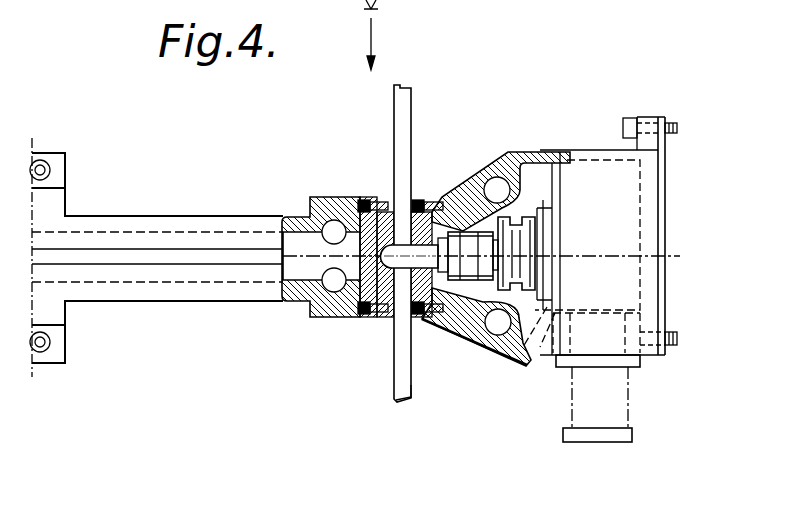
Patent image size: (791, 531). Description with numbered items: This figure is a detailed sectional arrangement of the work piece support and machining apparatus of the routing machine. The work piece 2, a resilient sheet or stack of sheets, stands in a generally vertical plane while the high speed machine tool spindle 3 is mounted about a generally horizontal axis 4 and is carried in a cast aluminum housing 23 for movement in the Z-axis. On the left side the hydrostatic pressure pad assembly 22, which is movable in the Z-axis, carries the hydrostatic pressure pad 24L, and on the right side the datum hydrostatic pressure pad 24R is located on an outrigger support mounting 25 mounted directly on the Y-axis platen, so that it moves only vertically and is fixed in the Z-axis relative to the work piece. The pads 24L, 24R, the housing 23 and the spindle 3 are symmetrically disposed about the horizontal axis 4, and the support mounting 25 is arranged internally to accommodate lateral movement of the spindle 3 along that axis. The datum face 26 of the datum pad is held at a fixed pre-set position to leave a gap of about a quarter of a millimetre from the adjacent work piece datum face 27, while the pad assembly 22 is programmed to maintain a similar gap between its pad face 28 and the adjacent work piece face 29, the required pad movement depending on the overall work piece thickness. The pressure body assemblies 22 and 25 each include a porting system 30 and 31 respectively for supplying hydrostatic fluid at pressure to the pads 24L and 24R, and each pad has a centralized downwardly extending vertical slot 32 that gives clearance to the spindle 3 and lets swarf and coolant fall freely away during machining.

The work piece 2 is at (398, 126).
The machine tool spindle 3 is at (397, 195).
The horizontal axis 4 is at (620, 257).
The hydrostatic pressure pad assembly 22 is at (333, 317).
The housing 23 is at (665, 208).
The hydrostatic pressure pad 24L is at (388, 317).
The datum hydrostatic pressure pad 24R is at (415, 317).
The outrigger support mounting 25 is at (443, 193).
The datum face 26 is at (425, 317).
The work piece datum face 27 is at (412, 388).
The pad face 28 is at (377, 317).
The work piece face 29 is at (402, 401).
The porting system 30 is at (300, 217).
The porting system 31 is at (510, 357).
The vertical slot 32 is at (417, 195).